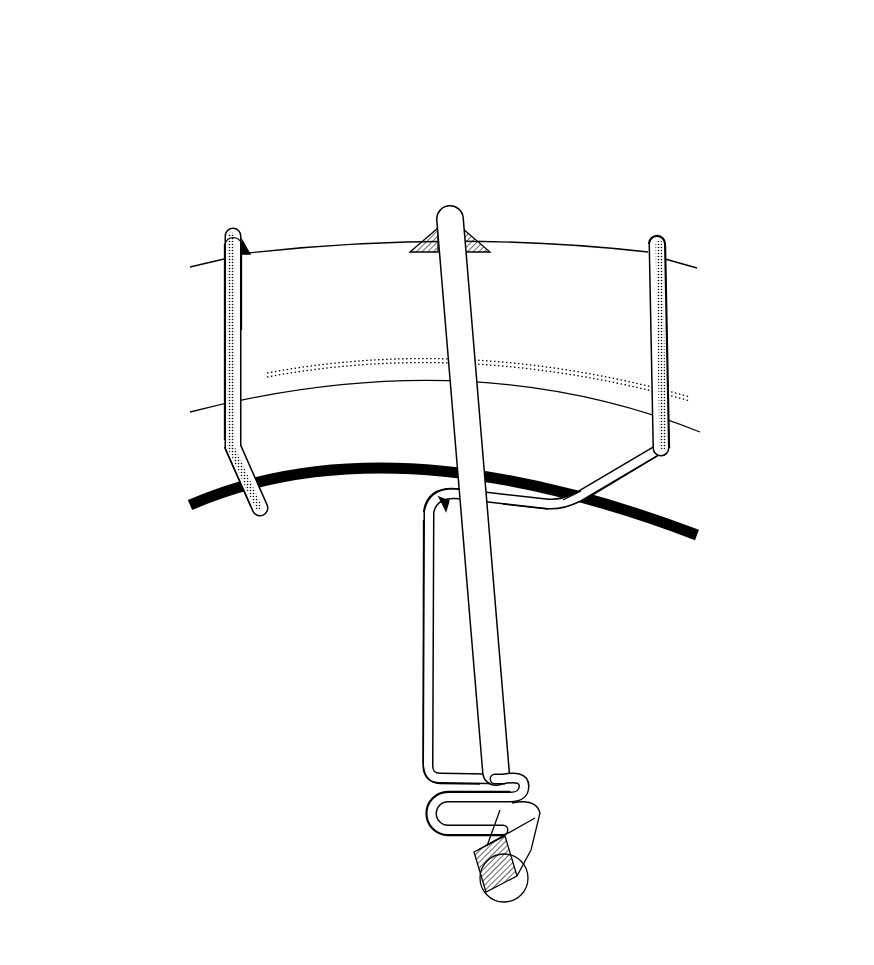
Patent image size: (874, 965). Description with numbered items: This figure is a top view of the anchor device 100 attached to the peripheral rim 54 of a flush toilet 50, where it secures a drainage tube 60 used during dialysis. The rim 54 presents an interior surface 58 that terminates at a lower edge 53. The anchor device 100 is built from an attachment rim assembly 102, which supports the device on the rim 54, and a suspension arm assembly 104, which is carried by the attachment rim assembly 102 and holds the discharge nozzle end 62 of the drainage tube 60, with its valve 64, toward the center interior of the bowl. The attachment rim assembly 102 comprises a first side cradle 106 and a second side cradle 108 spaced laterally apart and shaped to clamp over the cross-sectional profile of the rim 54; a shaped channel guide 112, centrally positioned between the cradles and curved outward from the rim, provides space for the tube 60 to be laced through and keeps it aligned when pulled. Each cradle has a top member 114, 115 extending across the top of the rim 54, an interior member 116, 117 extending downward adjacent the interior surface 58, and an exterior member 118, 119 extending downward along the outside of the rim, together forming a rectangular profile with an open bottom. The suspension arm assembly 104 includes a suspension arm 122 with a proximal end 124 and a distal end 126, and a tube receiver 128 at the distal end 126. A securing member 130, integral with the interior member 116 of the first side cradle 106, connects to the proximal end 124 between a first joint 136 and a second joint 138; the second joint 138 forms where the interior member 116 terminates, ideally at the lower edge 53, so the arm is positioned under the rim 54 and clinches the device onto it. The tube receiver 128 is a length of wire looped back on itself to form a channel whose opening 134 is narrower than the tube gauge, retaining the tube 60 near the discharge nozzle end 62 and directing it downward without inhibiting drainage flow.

The anchor device 100 is at (160, 157).
The flush toilet 50 is at (699, 228).
The lower edge 53 is at (195, 513).
The peripheral rim 54 is at (297, 248).
The interior surface 58 is at (548, 440).
The drainage tube 60 is at (506, 275).
The discharge nozzle end 62 is at (556, 801).
The valve 64 is at (473, 865).
The attachment rim assembly 102 is at (162, 342).
The suspension arm assembly 104 is at (380, 704).
The first side cradle 106 is at (715, 335).
The second side cradle 108 is at (196, 291).
The shaped channel guide 112 is at (481, 190).
The top member 114 is at (667, 323).
The top member 115 is at (223, 337).
The interior member 116 is at (643, 475).
The interior member 117 is at (235, 465).
The exterior member 118 is at (641, 255).
The exterior member 119 is at (247, 233).
The suspension arm 122 is at (420, 658).
The proximal end 124 is at (397, 536).
The distal end 126 is at (396, 774).
The tube receiver 128 is at (554, 750).
The securing member 130 is at (515, 510).
The opening 134 is at (435, 788).
The first joint 136 is at (430, 477).
The second joint 138 is at (571, 542).